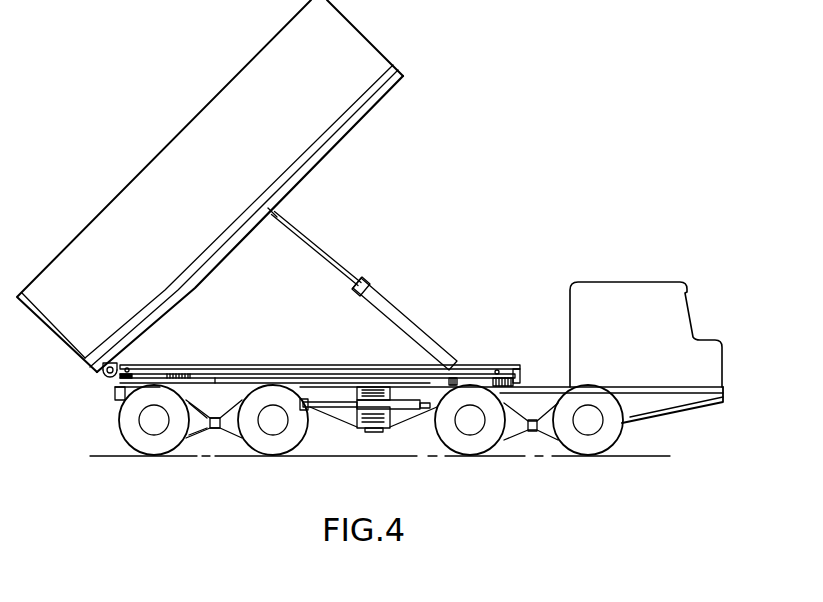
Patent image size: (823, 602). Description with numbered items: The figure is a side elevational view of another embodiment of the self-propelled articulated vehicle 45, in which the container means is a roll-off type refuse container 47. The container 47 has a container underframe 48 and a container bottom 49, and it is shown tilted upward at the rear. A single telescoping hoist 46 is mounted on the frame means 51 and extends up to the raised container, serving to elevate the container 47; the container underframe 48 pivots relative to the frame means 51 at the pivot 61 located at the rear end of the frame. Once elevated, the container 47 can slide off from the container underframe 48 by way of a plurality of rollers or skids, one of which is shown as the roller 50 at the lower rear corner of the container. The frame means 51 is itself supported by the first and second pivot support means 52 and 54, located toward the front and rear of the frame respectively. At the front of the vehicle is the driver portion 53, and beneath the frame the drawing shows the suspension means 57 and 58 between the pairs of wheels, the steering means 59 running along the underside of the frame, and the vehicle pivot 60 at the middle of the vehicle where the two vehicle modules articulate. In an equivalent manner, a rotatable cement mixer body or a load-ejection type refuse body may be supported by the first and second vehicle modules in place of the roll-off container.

The self-propelled articulated vehicle 45 is at (618, 275).
The single telescoping hoist 46 is at (410, 322).
The roll-off type refuse container 47 is at (355, 62).
The container underframe 48 is at (345, 137).
The container bottom 49 is at (380, 85).
The roller 50 is at (108, 375).
The frame means 51 is at (483, 370).
The first pivot support means 52 is at (512, 382).
The driver portion 53 is at (213, 383).
The second pivot support means 54 is at (167, 380).
The suspension means 57 is at (235, 432).
The suspension means 58 is at (513, 432).
The steering means 59 is at (418, 410).
The vehicle pivot 60 is at (372, 395).
The pivot 61 is at (122, 363).